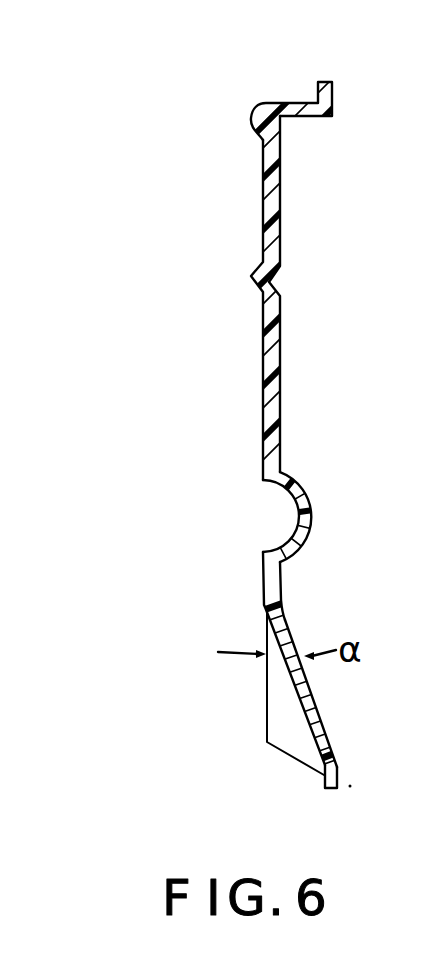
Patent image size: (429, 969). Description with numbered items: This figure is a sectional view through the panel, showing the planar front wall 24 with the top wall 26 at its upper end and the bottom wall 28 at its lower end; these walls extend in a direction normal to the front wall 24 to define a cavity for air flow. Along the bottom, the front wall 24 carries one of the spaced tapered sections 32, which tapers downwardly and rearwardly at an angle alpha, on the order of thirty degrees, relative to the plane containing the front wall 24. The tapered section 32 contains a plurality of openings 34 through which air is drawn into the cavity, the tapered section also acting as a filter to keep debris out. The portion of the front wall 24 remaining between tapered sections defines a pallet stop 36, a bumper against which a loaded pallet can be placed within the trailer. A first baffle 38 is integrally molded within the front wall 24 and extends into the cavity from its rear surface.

The front wall 24 is at (263, 400).
The top wall 26 is at (285, 104).
The bottom wall 28 is at (292, 758).
The tapered section 32 is at (330, 726).
The openings 34 is at (300, 692).
The pallet stops 36 is at (286, 700).
The first baffle 38 is at (311, 521).